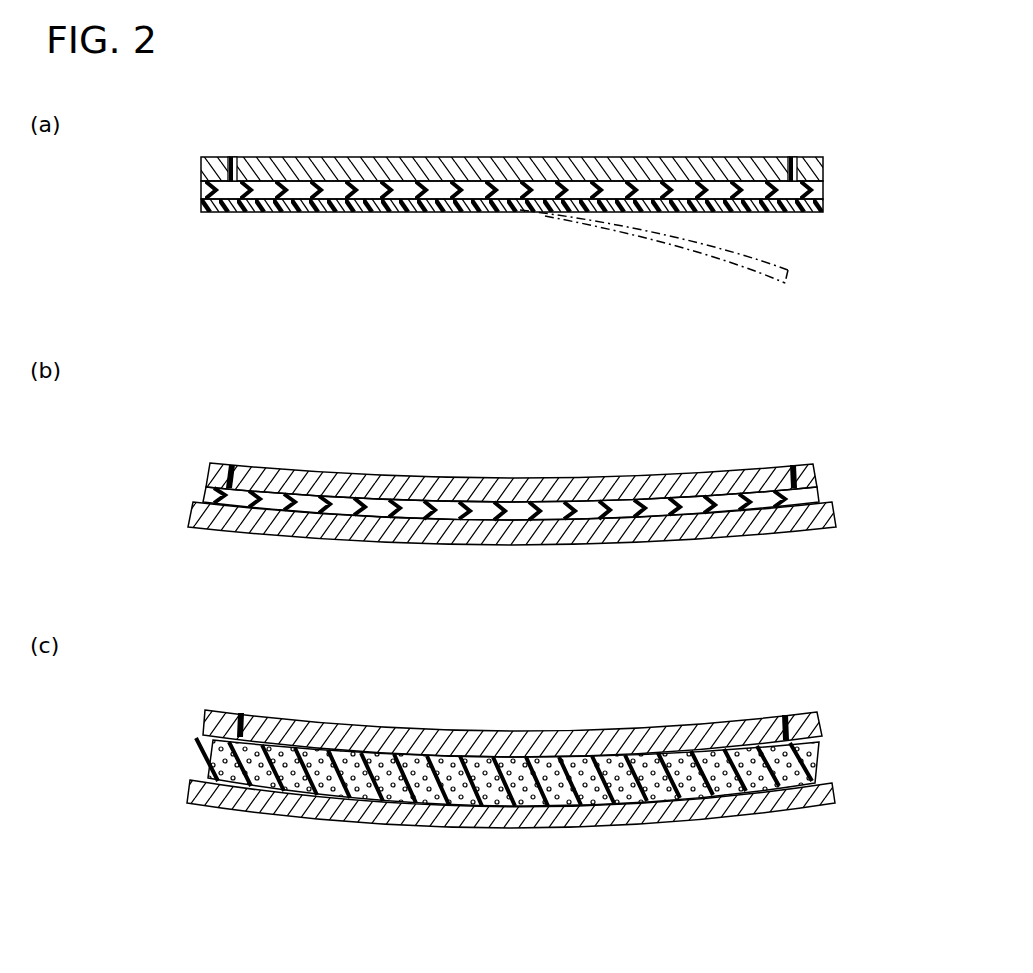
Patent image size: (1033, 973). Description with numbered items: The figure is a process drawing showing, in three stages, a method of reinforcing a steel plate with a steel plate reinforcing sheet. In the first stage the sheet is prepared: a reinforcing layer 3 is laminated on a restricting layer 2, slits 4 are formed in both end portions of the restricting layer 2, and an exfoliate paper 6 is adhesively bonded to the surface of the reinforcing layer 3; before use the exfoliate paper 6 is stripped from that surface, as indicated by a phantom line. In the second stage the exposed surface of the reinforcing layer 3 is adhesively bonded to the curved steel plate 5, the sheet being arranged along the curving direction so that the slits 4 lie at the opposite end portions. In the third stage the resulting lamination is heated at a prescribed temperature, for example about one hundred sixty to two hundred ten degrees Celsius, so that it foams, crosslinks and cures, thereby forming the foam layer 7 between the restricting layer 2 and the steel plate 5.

The restricting layer 2 is at (823, 164).
The reinforcing layer 3 is at (823, 189).
The slits 4 is at (233, 158).
The steel plate 5 is at (836, 517).
The exfoliate paper 6 is at (823, 206).
The foam layer 7 is at (818, 758).